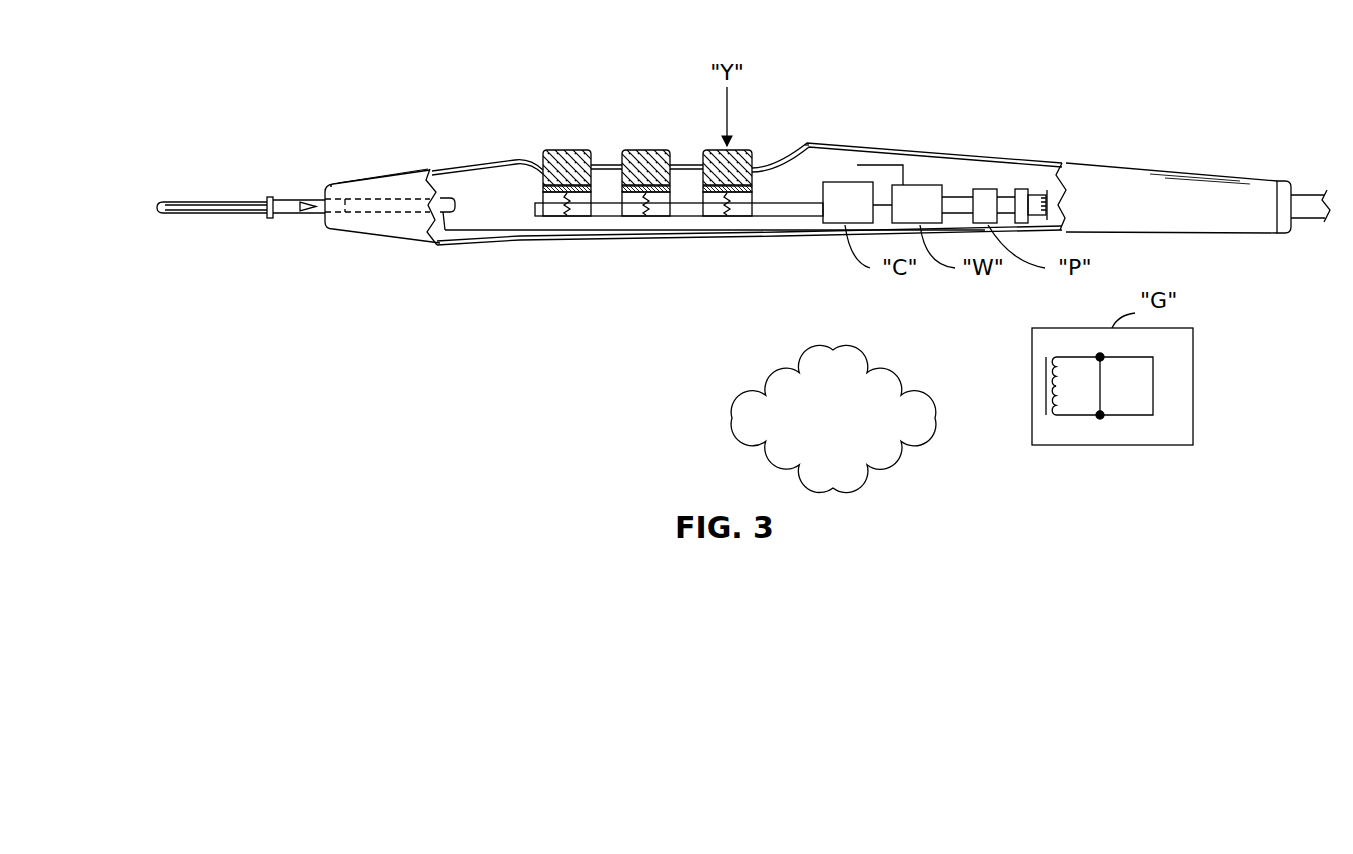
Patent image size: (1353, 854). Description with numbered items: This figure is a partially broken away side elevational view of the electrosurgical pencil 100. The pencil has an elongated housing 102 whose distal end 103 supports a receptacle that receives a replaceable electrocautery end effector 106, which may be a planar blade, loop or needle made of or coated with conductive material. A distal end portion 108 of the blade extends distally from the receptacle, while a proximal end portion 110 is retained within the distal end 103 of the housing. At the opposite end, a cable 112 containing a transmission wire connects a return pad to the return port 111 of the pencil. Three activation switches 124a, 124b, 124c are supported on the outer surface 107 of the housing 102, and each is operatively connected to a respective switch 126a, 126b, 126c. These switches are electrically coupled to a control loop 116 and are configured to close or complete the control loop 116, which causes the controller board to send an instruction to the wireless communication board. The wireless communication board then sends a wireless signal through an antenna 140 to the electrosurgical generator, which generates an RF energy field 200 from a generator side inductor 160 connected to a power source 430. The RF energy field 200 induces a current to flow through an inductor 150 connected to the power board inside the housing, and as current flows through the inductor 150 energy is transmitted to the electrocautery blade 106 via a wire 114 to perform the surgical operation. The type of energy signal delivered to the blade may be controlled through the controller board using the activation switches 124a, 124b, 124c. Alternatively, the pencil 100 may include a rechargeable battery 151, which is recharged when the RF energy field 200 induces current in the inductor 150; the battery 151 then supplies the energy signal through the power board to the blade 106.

The electrosurgical pencil 100 is at (930, 78).
The elongated housing 102 is at (1087, 160).
The distal end 103 is at (372, 185).
The electrocautery end effector 106 is at (205, 195).
The outer surface 107 is at (582, 245).
The distal end portion 108 is at (160, 205).
The proximal end portion 110 is at (365, 215).
The return port 111 is at (1278, 182).
The cable 112 is at (1307, 230).
The wire 114 is at (748, 228).
The control loop 116 is at (818, 155).
The activation switch 124a is at (573, 148).
The activation switch 124b is at (650, 148).
The activation switch 124c is at (745, 148).
The switch 126a is at (543, 190).
The switch 126b is at (622, 190).
The switch 126c is at (703, 190).
The antenna 140 is at (905, 165).
The inductor 150 is at (1050, 205).
The rechargeable battery 151 is at (1023, 190).
The generator side inductor 160 is at (1049, 385).
The RF energy field 200 is at (833, 352).
The power source 430 is at (1140, 383).